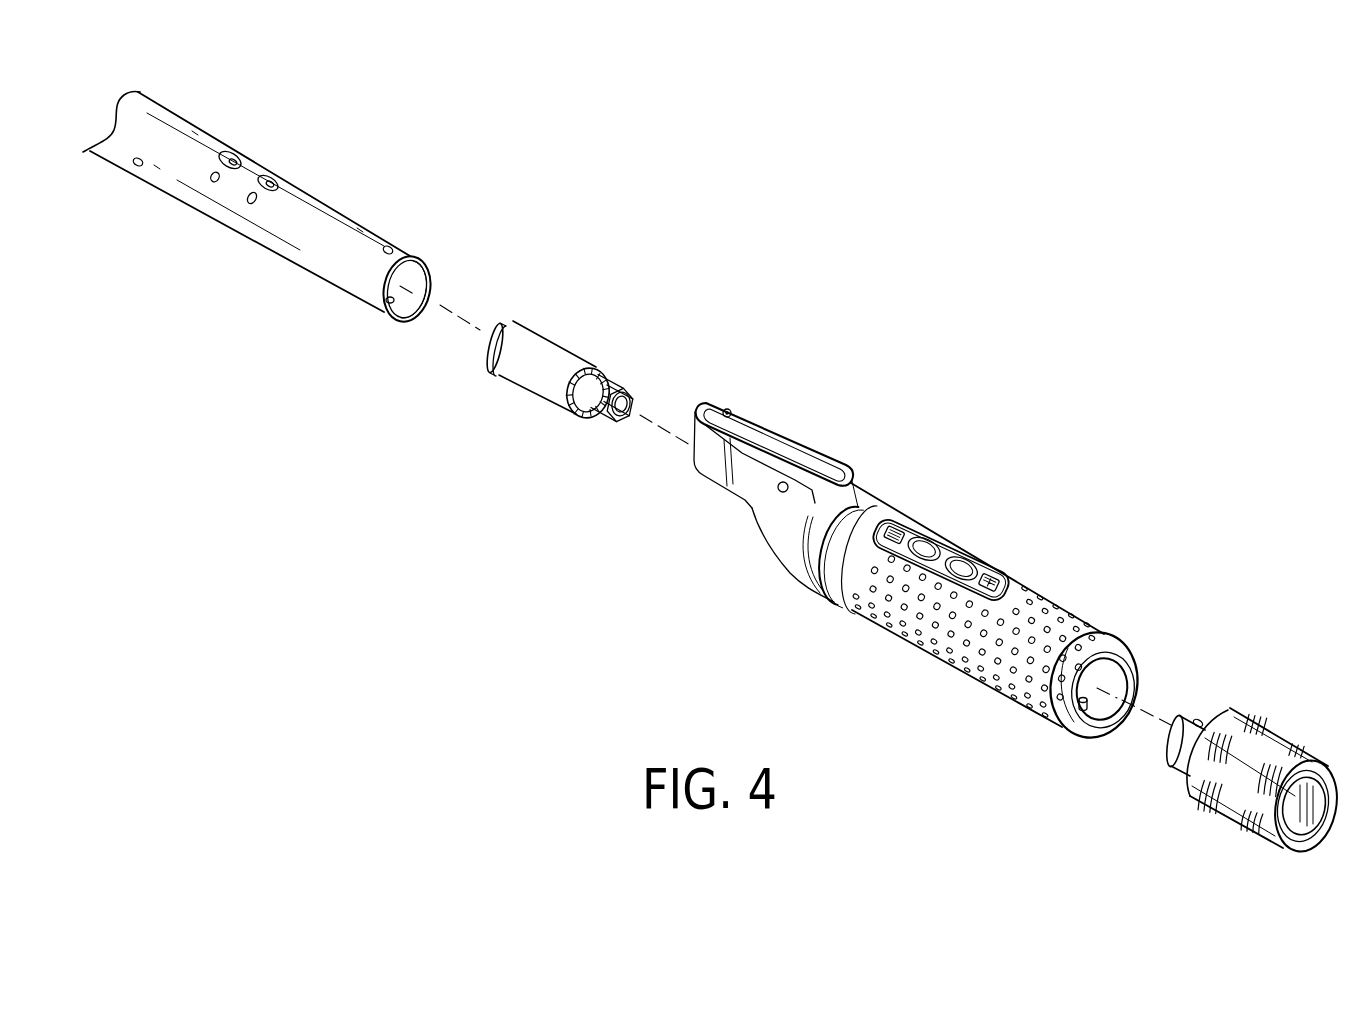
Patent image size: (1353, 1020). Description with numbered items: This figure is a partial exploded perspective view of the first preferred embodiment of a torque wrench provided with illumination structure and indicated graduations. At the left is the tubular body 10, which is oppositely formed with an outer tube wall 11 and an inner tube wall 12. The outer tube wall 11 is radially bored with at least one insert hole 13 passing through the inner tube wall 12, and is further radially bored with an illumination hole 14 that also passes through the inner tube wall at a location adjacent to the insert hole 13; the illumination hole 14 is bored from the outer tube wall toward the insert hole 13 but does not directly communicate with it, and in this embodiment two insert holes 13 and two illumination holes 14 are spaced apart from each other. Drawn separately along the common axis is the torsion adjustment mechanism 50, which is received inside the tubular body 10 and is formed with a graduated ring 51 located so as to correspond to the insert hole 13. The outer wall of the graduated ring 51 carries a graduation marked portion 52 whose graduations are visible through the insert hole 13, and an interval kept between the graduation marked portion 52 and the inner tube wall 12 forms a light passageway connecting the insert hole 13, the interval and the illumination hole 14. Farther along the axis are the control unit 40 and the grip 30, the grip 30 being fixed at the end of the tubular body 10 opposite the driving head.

The tubular body 10 is at (281, 238).
The outer tube wall 11 is at (405, 245).
The inner tube wall 12 is at (412, 313).
The insert hole 13 is at (268, 182).
The illumination hole 14 is at (247, 200).
The grip 30 is at (1050, 597).
The control unit 40 is at (797, 430).
The torsion adjustment mechanism 50 is at (587, 331).
The graduated ring 51 is at (513, 320).
The graduation marked portion 52 is at (533, 335).